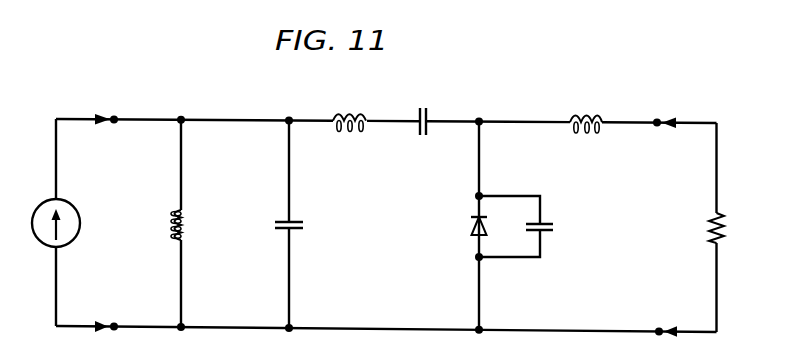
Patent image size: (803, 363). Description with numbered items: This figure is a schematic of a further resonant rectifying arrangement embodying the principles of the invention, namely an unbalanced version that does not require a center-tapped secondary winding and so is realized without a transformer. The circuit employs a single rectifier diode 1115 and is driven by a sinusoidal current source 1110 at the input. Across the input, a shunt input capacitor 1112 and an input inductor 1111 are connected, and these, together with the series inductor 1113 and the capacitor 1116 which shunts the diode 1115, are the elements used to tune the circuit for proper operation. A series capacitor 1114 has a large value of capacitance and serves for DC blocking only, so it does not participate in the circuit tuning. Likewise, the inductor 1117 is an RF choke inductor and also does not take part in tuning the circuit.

The sinusoidal current source 1110 is at (72, 223).
The input inductor 1111 is at (193, 225).
The shunt input capacitor 1112 is at (305, 227).
The inductor 1113 is at (349, 109).
The capacitor 1114 is at (422, 110).
The rectifier diode 1115 is at (464, 227).
The capacitor 1116 is at (532, 226).
The RF choke inductor 1117 is at (586, 109).